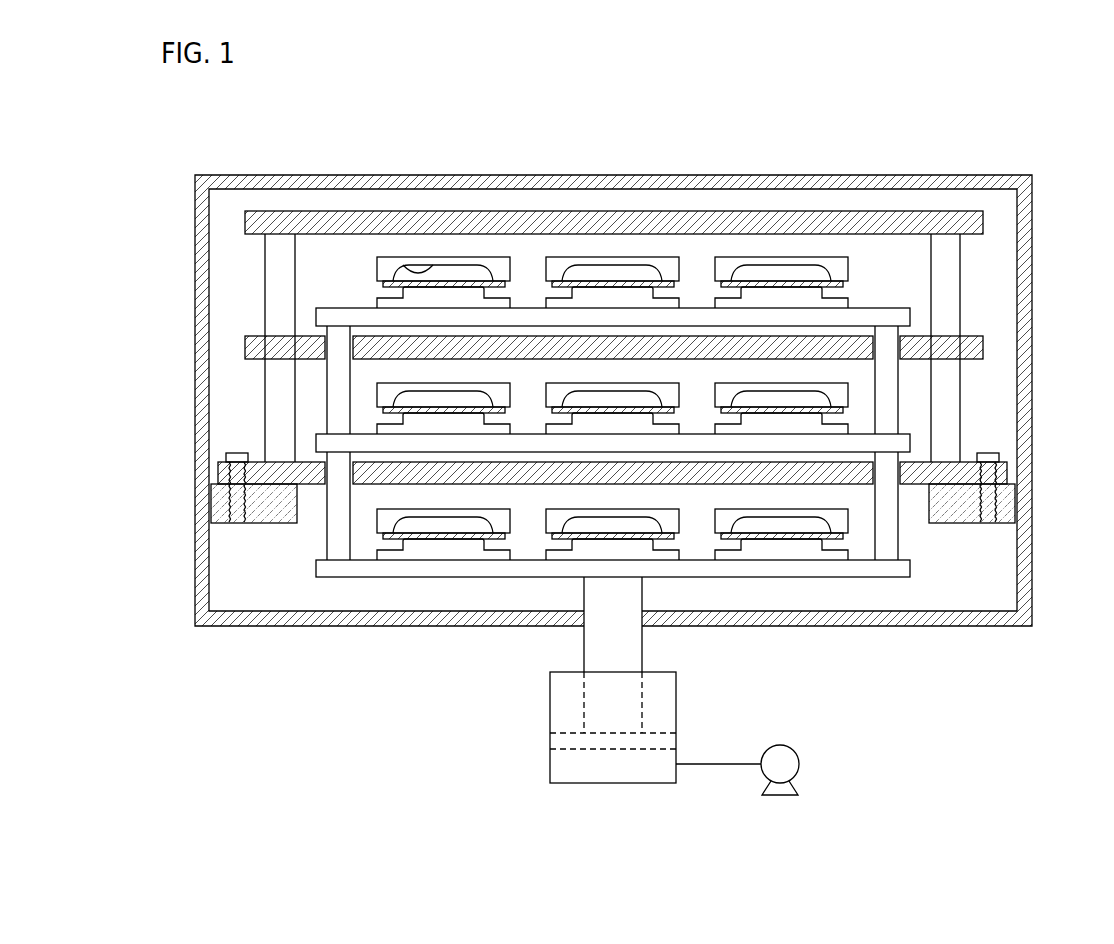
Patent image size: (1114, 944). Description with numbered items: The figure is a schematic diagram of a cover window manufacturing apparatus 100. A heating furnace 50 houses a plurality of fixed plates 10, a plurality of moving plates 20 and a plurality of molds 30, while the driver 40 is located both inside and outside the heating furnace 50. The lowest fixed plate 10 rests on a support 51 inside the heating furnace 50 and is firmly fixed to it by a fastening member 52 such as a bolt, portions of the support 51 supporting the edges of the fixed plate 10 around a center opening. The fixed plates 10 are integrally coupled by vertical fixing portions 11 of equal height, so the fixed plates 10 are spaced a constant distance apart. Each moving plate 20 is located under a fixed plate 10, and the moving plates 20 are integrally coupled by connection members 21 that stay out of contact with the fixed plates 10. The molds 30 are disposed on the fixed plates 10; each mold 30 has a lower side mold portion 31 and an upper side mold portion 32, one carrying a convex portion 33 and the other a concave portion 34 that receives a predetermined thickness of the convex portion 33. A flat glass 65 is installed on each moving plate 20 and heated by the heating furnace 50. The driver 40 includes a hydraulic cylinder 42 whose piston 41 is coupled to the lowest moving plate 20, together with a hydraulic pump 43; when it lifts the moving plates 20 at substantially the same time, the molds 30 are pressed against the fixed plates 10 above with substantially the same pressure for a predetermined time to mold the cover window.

The cover window manufacturing apparatus 100 is at (575, 108).
The fixed plate 10 is at (985, 216).
The vertical fixing portion 11 is at (950, 278).
The moving plate 20 is at (316, 318).
The connection member 21 is at (335, 377).
The mold 30 is at (623, 238).
The lower side mold portion 31 is at (453, 216).
The upper side mold portion 32 is at (405, 201).
The convex portion 33 is at (443, 219).
The concave portion 34 is at (443, 205).
The flat glass 65 is at (767, 285).
The driver 40 is at (536, 755).
The piston 41 is at (600, 649).
The hydraulic cylinder 42 is at (550, 692).
The hydraulic pump 43 is at (795, 752).
The heating furnace 50 is at (200, 281).
The support 51 is at (212, 515).
The fastening member 52 is at (233, 473).